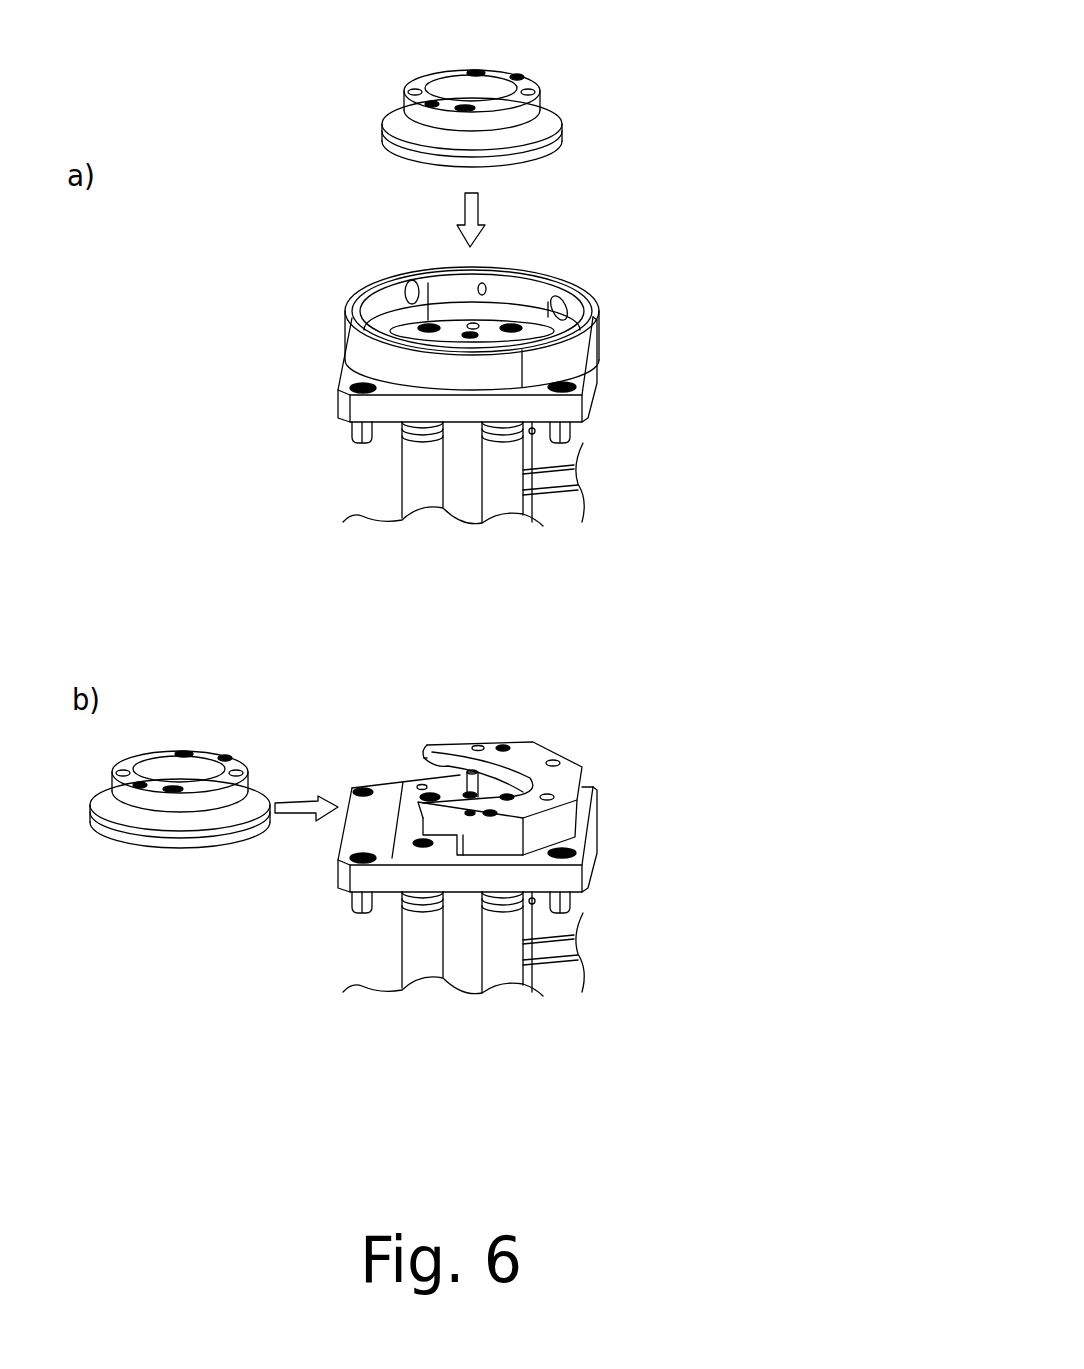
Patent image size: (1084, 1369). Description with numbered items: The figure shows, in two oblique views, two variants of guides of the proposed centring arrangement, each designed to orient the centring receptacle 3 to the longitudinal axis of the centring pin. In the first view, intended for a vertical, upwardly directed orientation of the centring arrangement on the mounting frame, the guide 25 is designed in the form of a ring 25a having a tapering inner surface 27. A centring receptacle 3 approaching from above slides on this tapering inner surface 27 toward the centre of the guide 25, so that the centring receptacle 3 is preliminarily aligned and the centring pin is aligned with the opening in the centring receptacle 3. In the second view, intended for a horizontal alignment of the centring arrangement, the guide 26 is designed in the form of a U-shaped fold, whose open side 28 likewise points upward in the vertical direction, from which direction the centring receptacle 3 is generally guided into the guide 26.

In FIG. 6a, the centring receptacle 3 is at (570, 88).
In FIG. 6b, the centring receptacle 3 is at (197, 746).
In FIG. 6a, the guide 25 is at (563, 359).
In FIG. 6a, the ring 25a is at (467, 421).
In FIG. 6b, the guide 26 is at (560, 823).
In FIG. 6a, the tapering inner surface 27 is at (518, 285).
In FIG. 6b, the open side 28 is at (373, 765).